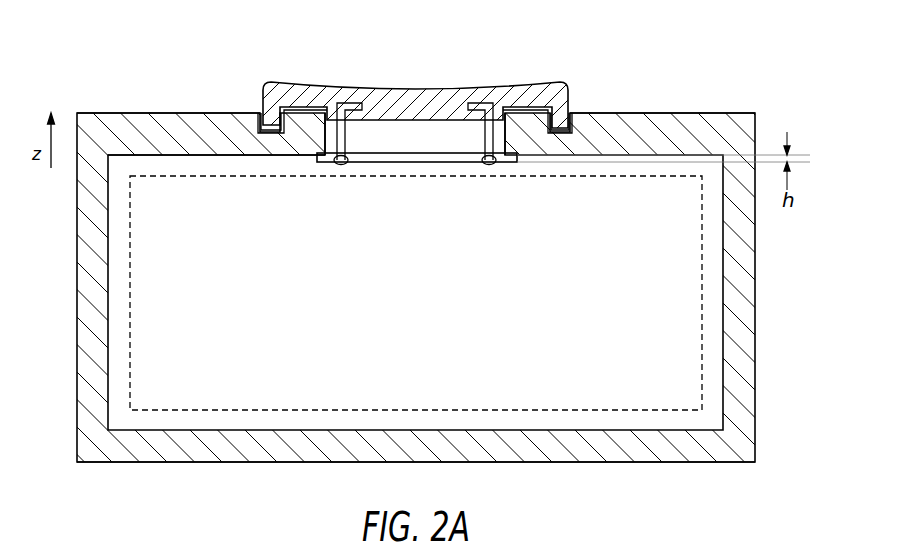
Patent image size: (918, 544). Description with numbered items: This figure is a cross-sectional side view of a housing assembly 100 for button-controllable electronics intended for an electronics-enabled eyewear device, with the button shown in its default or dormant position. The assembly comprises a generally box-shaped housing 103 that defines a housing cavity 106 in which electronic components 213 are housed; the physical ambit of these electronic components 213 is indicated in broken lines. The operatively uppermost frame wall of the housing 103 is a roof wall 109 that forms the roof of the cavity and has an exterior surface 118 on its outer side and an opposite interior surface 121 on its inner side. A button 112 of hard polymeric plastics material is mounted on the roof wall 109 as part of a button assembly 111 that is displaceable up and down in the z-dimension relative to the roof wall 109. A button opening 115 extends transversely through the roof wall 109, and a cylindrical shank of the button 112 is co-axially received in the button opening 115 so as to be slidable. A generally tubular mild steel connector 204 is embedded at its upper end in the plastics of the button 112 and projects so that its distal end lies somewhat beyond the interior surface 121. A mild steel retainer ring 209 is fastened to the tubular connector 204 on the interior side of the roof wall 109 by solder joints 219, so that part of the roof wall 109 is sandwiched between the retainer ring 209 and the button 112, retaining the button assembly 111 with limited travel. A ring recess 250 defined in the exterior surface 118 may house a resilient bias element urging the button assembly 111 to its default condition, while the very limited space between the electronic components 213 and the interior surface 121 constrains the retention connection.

The housing assembly 100 is at (459, 250).
The housing 103 is at (90, 265).
The housing cavity 106 is at (201, 445).
The roof wall 109 is at (620, 140).
The button assembly 111 is at (407, 121).
The button 112 is at (448, 102).
The button opening 115 is at (310, 131).
The exterior surface 118 is at (143, 99).
The interior surface 121 is at (212, 171).
The tubular connector 204 is at (373, 162).
The retainer ring 209 is at (507, 165).
The electronic components 213 is at (708, 350).
The solder joints 219 is at (350, 160).
The ring recess 250 is at (244, 114).